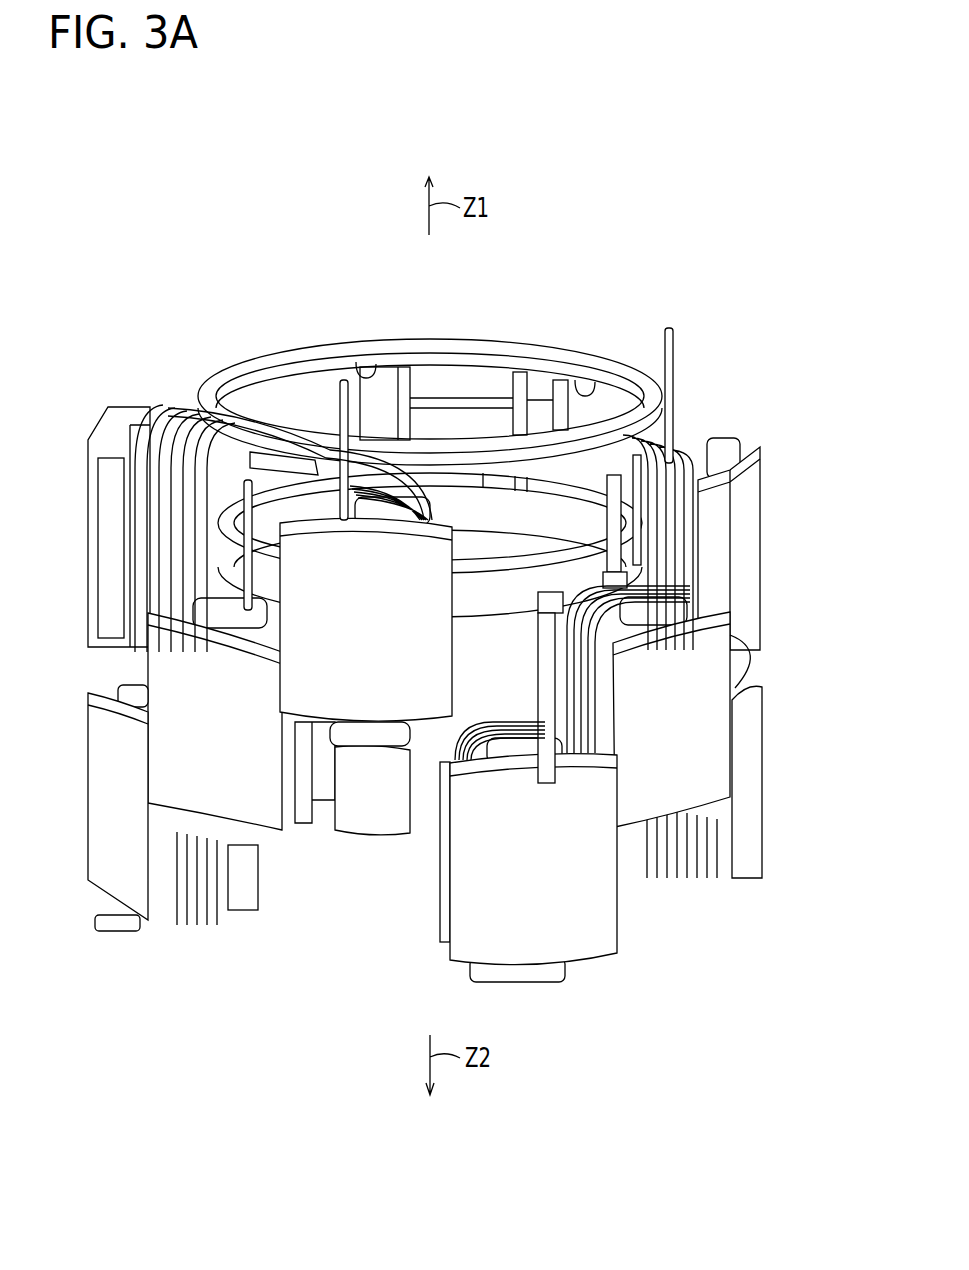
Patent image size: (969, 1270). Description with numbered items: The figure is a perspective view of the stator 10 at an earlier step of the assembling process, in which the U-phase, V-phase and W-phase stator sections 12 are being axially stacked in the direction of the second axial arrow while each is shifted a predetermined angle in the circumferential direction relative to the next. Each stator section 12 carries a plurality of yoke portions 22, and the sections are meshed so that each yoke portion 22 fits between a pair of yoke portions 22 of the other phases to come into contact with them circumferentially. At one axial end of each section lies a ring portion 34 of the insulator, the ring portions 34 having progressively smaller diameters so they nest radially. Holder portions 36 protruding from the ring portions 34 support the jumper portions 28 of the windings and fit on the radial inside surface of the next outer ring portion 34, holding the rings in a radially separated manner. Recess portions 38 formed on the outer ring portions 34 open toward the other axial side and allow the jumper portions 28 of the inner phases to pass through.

The stator 10 is at (427, 131).
The stator section 12 is at (423, 694).
The yoke portion 22 is at (86, 546).
The jumper portion 28 is at (787, 563).
The ring portion 34 is at (533, 343).
The holder portion 36 is at (787, 725).
The recess portion 38 is at (357, 366).